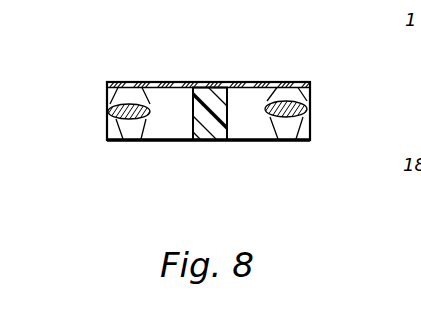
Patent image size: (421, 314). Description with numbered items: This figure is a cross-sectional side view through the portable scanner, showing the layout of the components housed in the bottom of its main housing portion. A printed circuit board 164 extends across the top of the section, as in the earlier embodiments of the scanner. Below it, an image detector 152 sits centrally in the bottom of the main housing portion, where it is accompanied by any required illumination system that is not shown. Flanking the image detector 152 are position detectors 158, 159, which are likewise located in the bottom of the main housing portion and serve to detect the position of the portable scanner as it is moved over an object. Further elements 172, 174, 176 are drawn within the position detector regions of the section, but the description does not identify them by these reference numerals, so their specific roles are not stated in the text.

The image detector 152 is at (196, 142).
The position detector 158 is at (287, 144).
The position detector 159 is at (124, 144).
The printed circuit board 164 is at (170, 82).
The sealing ring 172 is at (112, 116).
The lower guide cone 174 is at (150, 123).
The upper guide cone 176 is at (116, 97).